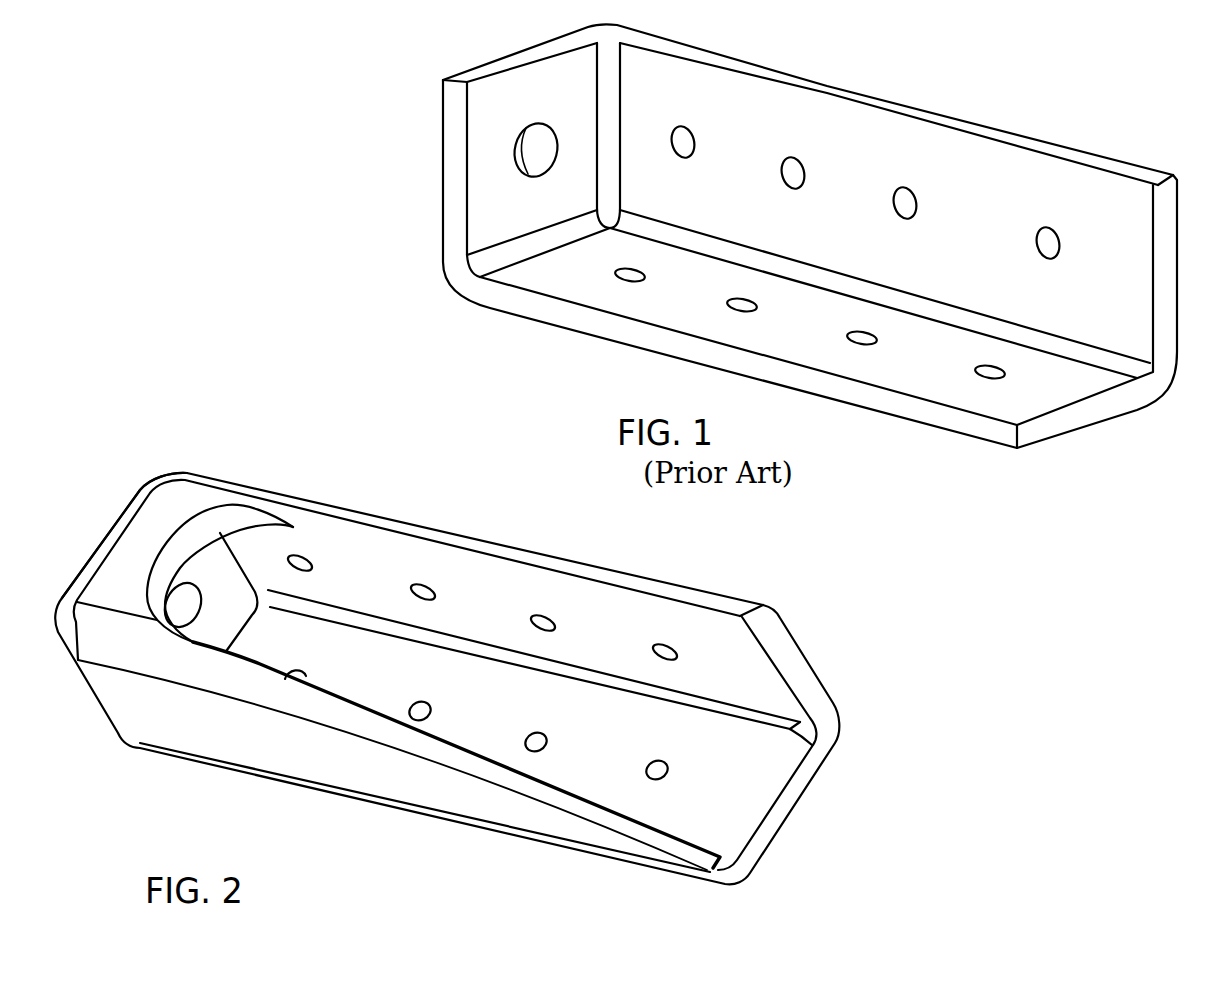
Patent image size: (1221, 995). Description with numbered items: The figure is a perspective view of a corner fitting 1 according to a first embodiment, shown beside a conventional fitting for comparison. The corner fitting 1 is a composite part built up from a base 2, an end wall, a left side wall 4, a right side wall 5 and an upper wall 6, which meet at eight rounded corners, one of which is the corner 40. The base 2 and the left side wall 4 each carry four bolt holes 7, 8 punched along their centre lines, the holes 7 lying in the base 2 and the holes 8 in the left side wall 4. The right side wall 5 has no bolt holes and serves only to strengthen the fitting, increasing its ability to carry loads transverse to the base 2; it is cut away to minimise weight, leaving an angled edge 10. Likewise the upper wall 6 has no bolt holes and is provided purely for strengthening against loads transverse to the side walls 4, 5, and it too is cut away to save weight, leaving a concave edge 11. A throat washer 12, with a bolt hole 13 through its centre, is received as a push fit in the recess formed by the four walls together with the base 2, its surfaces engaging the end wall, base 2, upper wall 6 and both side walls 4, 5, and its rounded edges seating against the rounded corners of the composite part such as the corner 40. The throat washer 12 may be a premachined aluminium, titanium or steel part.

The corner fitting 1 is at (304, 466).
The base 2 is at (779, 810).
The left side wall 4 is at (550, 570).
The right side wall 5 is at (212, 742).
The upper wall 6 is at (140, 510).
The bolt holes 7 is at (307, 680).
The bolt holes 8 is at (303, 557).
The angled edge 10 is at (570, 808).
The concave edge 11 is at (193, 530).
The throat washer 12 is at (223, 630).
The bolt hole 13 is at (167, 612).
The corner 40 is at (794, 734).